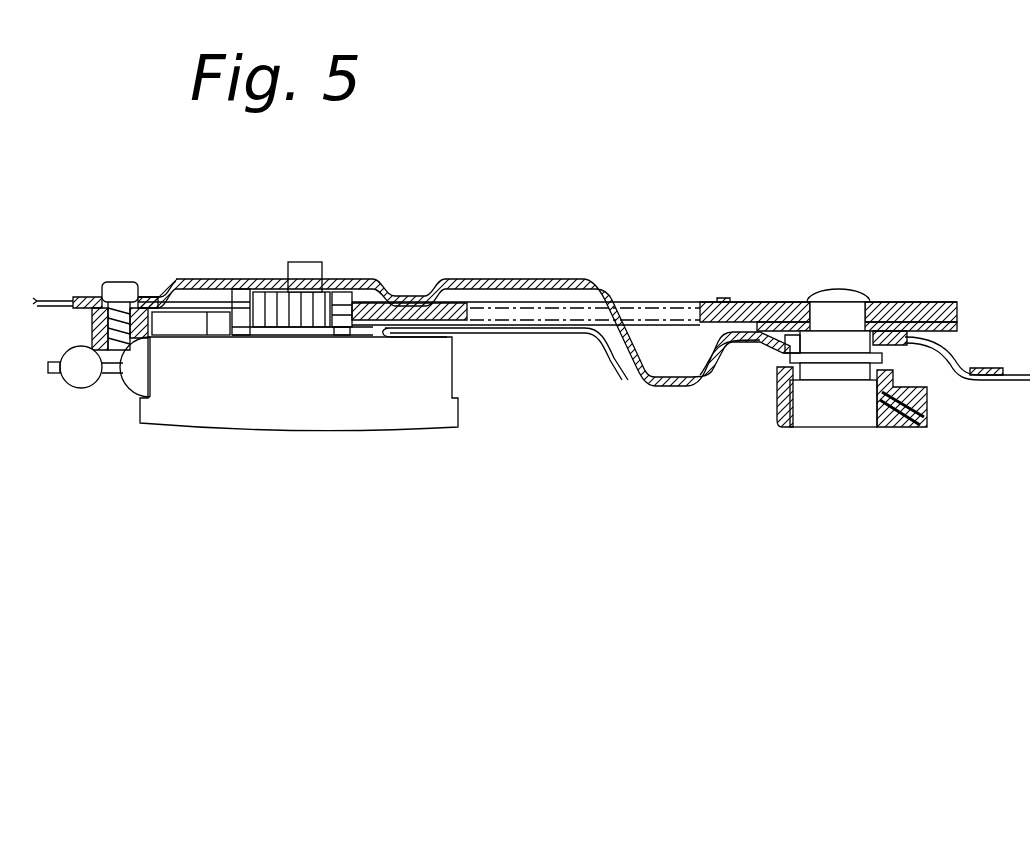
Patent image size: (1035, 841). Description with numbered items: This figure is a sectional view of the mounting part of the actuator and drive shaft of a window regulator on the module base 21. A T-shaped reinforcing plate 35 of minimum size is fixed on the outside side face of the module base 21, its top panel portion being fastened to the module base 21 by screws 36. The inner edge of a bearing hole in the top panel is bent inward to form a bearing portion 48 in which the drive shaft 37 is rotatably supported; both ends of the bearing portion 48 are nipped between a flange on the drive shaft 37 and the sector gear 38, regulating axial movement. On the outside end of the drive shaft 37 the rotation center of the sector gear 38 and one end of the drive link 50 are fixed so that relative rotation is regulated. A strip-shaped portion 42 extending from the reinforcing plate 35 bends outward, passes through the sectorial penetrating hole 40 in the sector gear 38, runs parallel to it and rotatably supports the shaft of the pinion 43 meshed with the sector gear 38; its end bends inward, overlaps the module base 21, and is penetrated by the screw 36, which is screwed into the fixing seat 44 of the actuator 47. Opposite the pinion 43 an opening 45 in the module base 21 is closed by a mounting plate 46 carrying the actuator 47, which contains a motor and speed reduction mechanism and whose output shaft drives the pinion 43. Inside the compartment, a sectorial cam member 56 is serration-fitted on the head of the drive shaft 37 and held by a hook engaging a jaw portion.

The module base 21 is at (602, 368).
The reinforcing plate 35 is at (968, 342).
The screw 36 is at (122, 283).
The drive shaft 37 is at (835, 313).
The sector gear 38 is at (722, 300).
The sectorial penetrating hole 40 is at (700, 312).
The strip-shaped portion 42 is at (556, 282).
The pinion 43 is at (283, 280).
The fixing seat 44 is at (93, 338).
The opening 45 is at (228, 284).
The mounting plate 46 is at (243, 300).
The actuator 47 is at (320, 430).
The bearing portion 48 is at (782, 366).
The drive link 50 is at (920, 302).
The cam member 56 is at (900, 428).